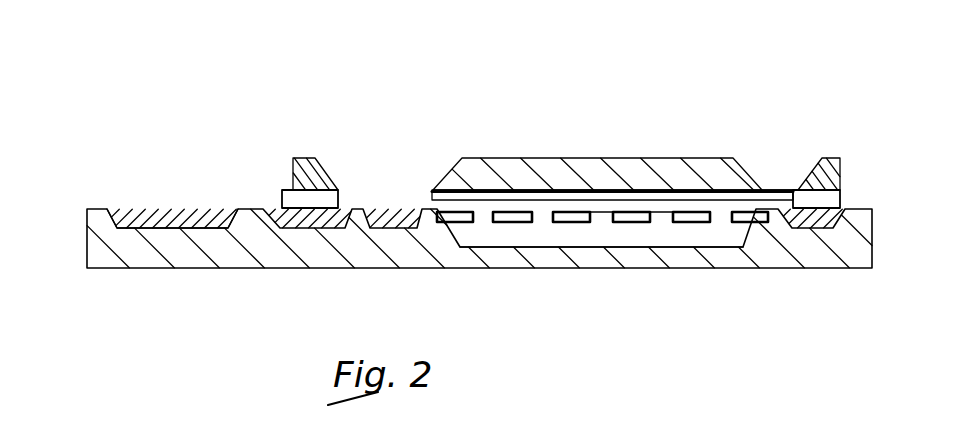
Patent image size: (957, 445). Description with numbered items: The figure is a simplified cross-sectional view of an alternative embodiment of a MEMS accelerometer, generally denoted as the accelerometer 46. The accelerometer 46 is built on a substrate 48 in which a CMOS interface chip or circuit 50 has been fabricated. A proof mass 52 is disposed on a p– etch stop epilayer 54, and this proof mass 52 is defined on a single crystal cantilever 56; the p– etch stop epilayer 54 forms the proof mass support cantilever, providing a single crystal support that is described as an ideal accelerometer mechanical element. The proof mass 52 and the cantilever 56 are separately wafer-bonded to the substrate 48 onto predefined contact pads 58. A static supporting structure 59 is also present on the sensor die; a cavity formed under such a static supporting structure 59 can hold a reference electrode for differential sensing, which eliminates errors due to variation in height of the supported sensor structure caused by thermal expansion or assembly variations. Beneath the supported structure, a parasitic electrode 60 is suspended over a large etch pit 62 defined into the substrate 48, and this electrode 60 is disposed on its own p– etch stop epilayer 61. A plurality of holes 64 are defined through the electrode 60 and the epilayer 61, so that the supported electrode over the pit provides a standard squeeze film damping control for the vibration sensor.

The accelerometer 46 is at (293, 139).
The substrate 48 is at (87, 257).
The CMOS interface chip 50 is at (168, 208).
The proof mass 52 is at (575, 160).
The p– etch stop epilayer 54 is at (493, 193).
The single crystal cantilever 56 is at (773, 190).
The contact pads 58 is at (349, 208).
The static supporting structure 59 is at (845, 160).
The parasitic electrode 60 is at (697, 222).
The p– etch stop epilayer 61 is at (517, 222).
The etch pit 62 is at (635, 247).
The holes 64 is at (600, 212).